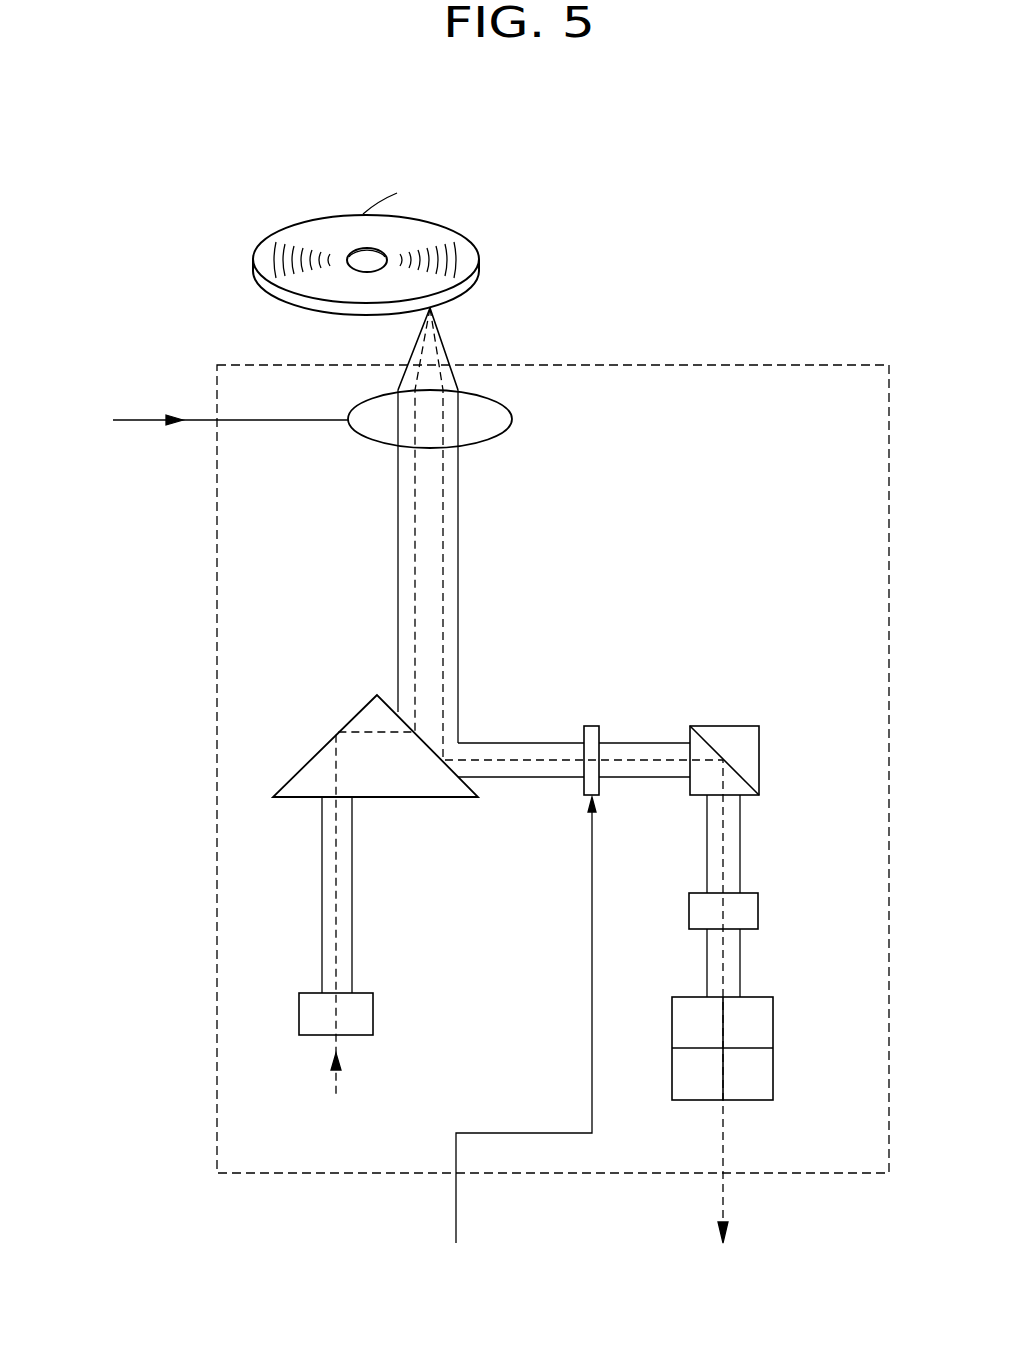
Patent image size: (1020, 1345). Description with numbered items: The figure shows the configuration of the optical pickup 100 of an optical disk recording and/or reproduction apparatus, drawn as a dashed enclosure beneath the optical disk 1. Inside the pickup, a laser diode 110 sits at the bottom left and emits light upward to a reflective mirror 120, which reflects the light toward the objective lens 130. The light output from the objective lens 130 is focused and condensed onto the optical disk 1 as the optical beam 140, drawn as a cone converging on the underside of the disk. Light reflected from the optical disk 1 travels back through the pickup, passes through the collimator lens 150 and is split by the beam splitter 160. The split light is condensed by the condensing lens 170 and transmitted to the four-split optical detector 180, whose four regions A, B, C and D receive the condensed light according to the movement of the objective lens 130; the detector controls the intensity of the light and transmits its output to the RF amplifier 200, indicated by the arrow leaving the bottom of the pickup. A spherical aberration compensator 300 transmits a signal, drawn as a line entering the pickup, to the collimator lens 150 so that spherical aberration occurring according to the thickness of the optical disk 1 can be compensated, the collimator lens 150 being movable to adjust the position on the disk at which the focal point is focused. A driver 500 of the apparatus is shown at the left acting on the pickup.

The optical disk 1 is at (313, 211).
The optical pickup 100 is at (652, 365).
The laser diode 110 is at (373, 1013).
The reflective mirror 120 is at (360, 712).
The objective lens 130 is at (512, 419).
The optical beam 140 is at (448, 340).
The collimator lens 150 is at (592, 726).
The beam splitter 160 is at (760, 760).
The condensing lens 170 is at (759, 910).
The 4-split optical detector 180 is at (774, 1048).
The RF amplifier 200 is at (723, 1254).
The spherical aberration compensator 300 is at (514, 1041).
The driver 500 is at (200, 419).